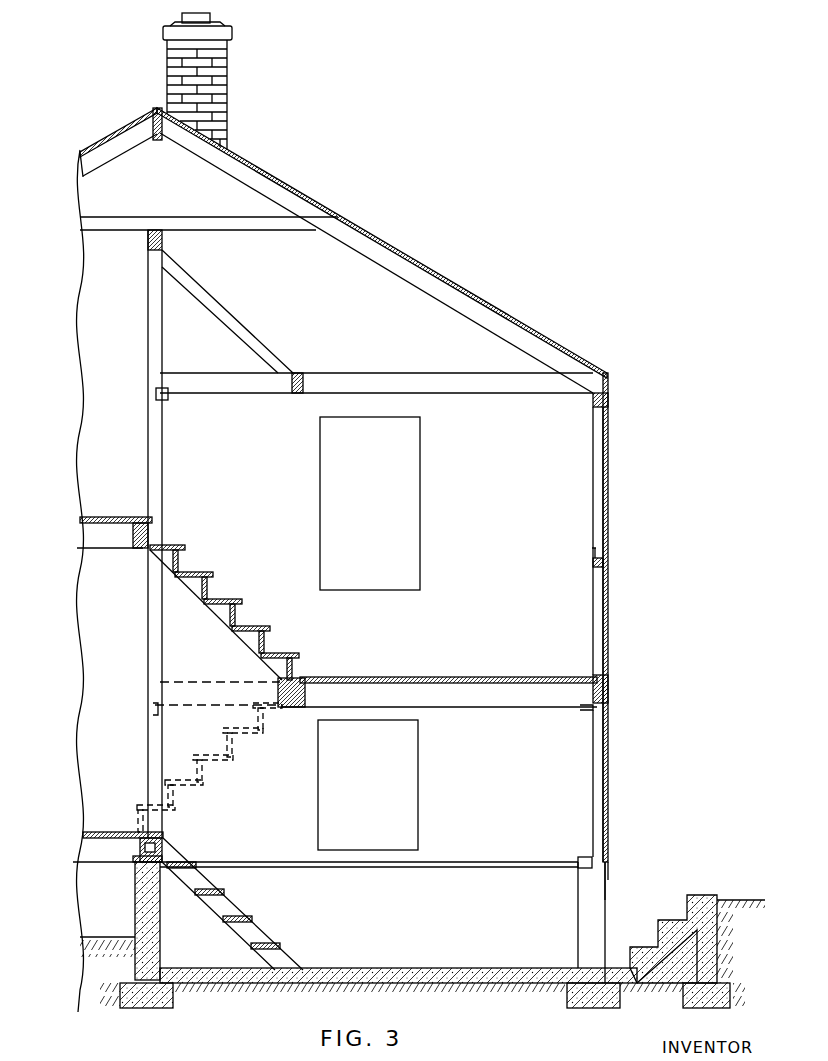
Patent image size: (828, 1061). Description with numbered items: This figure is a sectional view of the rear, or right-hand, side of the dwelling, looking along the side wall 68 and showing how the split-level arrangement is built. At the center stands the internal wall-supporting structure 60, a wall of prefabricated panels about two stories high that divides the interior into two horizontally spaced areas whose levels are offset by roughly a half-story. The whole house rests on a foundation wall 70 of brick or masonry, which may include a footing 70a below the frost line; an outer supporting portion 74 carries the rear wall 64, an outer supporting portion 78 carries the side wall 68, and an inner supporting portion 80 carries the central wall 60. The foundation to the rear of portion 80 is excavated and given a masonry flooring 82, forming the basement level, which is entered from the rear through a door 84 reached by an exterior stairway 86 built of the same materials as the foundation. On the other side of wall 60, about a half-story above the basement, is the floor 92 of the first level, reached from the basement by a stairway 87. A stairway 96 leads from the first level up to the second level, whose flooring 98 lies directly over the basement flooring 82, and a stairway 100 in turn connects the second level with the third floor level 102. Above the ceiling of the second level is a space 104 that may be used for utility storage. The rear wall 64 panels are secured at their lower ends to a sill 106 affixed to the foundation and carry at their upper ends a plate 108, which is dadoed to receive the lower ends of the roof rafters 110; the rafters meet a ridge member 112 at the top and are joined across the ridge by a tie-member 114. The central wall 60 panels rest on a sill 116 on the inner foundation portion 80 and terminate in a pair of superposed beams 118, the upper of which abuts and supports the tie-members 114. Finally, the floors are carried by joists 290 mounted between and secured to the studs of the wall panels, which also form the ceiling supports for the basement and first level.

The internal wall-supporting structure 60 is at (163, 476).
The rear wall 64 is at (609, 460).
The side wall 68 is at (487, 541).
The foundation wall 70 is at (137, 956).
The footing 70a is at (142, 1005).
The outer supporting portion 74 is at (610, 880).
The outer supporting portion 78 is at (399, 911).
The inner supporting portion 80 is at (135, 905).
The flooring 82 is at (393, 968).
The door 84 is at (603, 780).
The stairway 86 is at (660, 930).
The stairway 87 is at (215, 888).
The floor 92 is at (118, 832).
The stairway 96 is at (233, 745).
The flooring 98 is at (467, 677).
The stairway 100 is at (212, 588).
The third floor level 102 is at (117, 490).
The space 104 is at (378, 280).
The sill 106 is at (582, 860).
The plate 108 is at (592, 398).
The roof rafter 110 is at (358, 249).
The ridge member 112 is at (150, 112).
The tie-member 114 is at (197, 217).
The sill 116 is at (133, 858).
The superposed beams 118 is at (164, 241).
The joists 290 is at (472, 700).